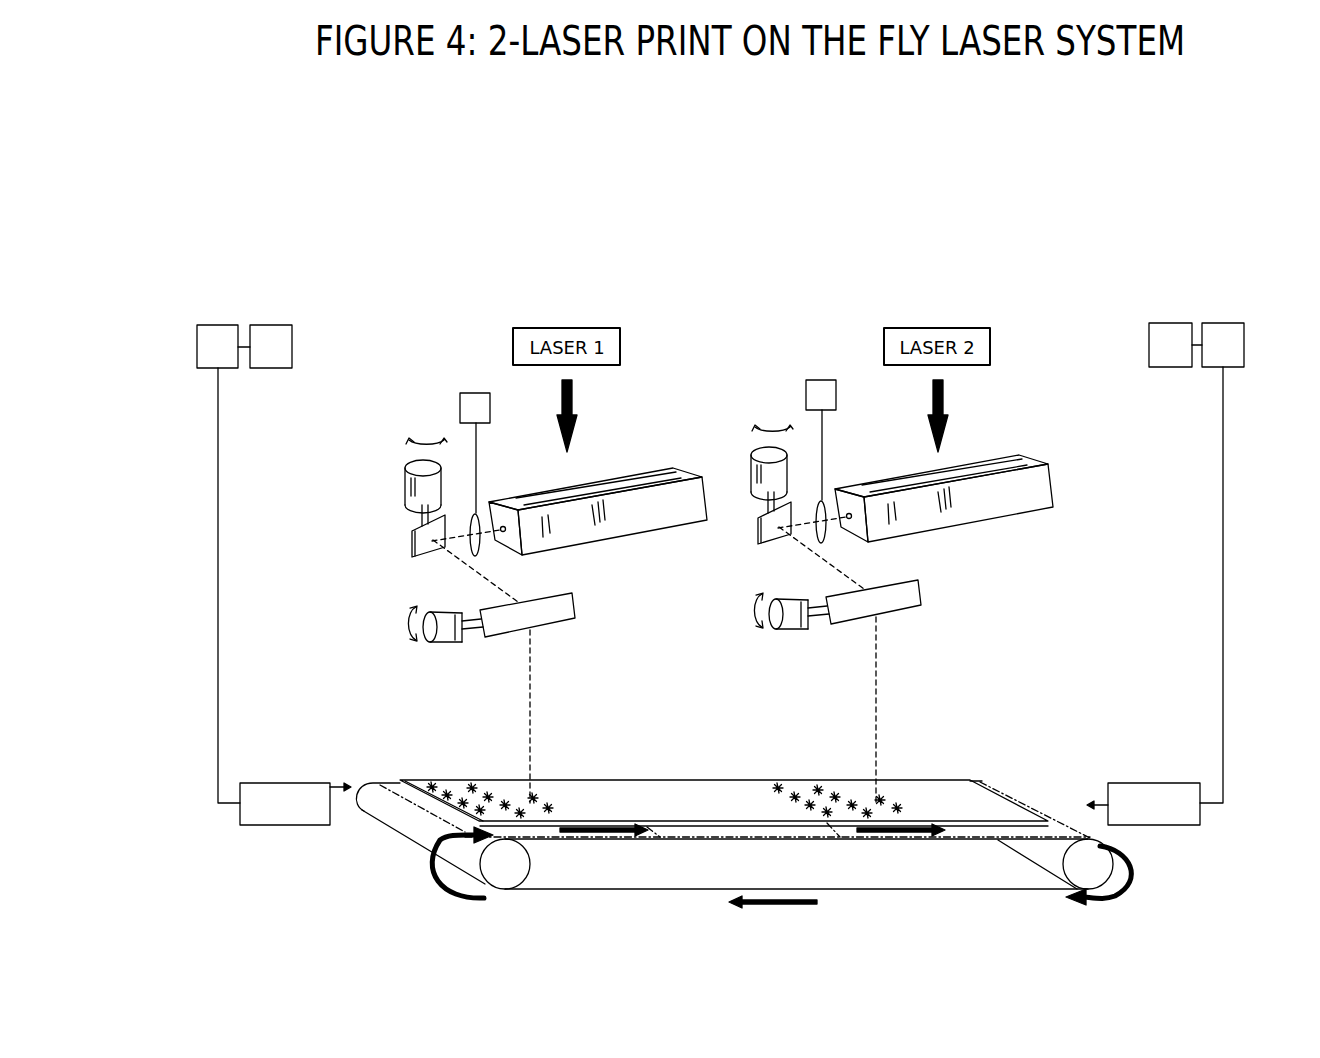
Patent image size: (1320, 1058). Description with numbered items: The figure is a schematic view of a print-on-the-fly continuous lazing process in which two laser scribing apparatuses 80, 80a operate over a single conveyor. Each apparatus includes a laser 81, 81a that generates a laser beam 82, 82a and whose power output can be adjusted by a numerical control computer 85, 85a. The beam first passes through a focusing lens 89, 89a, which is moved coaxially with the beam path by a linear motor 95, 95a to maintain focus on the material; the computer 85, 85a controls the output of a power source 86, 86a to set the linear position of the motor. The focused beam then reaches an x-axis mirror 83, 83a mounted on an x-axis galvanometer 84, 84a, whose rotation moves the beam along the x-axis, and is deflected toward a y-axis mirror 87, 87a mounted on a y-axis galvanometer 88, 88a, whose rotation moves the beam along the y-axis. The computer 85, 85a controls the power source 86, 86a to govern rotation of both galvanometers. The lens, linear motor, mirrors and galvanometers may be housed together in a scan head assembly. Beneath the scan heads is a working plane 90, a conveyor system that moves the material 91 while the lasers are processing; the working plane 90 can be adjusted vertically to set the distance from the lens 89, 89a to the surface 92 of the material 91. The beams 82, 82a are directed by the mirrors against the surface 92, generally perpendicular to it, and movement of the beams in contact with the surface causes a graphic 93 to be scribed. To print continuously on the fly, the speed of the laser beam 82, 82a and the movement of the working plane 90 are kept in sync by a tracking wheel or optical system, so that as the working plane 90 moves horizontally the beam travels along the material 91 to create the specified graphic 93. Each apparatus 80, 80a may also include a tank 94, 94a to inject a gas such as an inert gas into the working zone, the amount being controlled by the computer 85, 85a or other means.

The apparatus 80 is at (256, 306).
The apparatus 80a is at (1185, 304).
The laser 81 is at (632, 482).
The laser 81a is at (944, 487).
The laser beam 82 is at (467, 560).
The laser beam 82a is at (823, 660).
The x-axis mirror 83 is at (412, 545).
The x-axis mirror 83a is at (753, 523).
The x-axis galvanometer 84 is at (433, 482).
The x-axis galvanometer 84a is at (788, 469).
The numerical control computer 85 is at (223, 346).
The numerical control computer 85a is at (1175, 345).
The power source 86 is at (271, 346).
The power source 86a is at (1223, 345).
The y-axis mirror 87 is at (567, 613).
The y-axis mirror 87a is at (897, 602).
The y-axis galvanometer 88 is at (445, 635).
The y-axis galvanometer 88a is at (791, 623).
The lens 89 is at (481, 547).
The lens 89a is at (840, 531).
The working plane 90 is at (1040, 890).
The material 91 is at (985, 786).
The surface 92 is at (947, 790).
The graphic 93 is at (555, 808).
The tank 94 is at (284, 596).
The tank 94a is at (1155, 596).
The linear motor 95 is at (475, 453).
The linear motor 95a is at (821, 440).